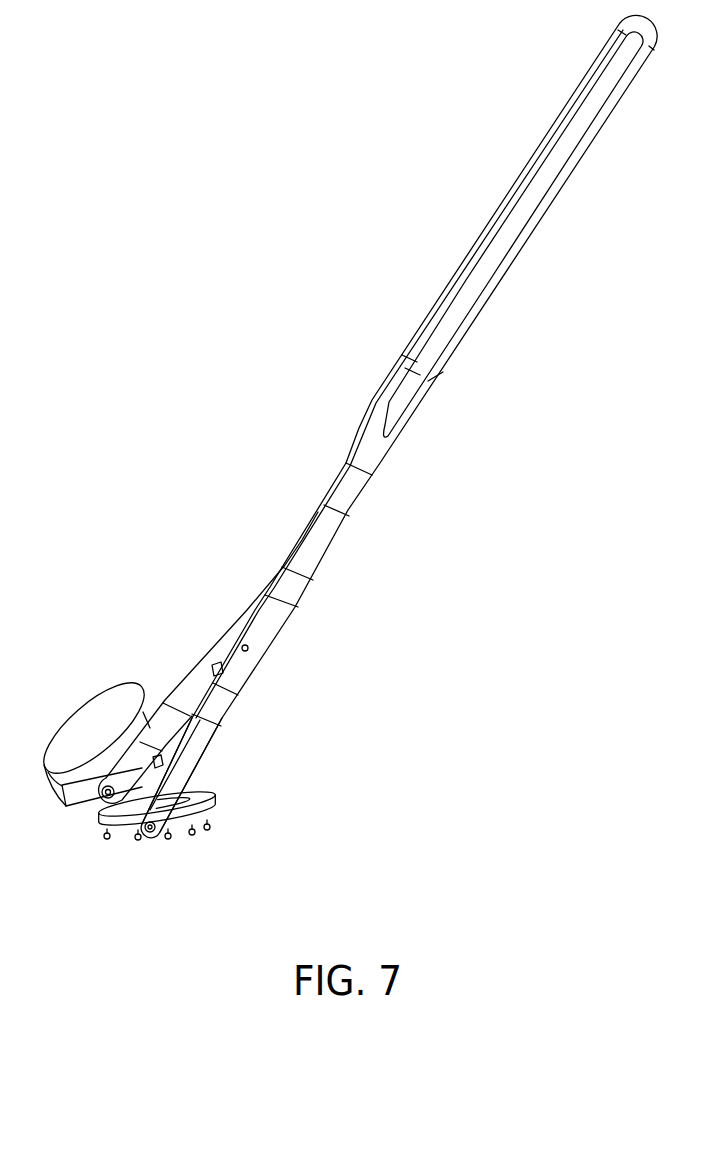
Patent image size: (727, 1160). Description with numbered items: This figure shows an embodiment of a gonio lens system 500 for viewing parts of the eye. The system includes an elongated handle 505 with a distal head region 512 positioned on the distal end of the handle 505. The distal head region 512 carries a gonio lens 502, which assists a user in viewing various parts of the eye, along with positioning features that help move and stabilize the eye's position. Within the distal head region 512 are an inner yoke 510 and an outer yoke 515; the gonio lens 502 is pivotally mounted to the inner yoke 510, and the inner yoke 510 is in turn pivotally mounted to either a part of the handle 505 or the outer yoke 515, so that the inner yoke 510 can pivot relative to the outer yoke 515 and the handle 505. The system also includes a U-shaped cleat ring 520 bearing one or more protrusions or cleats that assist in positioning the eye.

The gonio lens system 500 is at (232, 144).
The handle 505 is at (548, 178).
The gonio lens 502 is at (85, 728).
The inner yoke 510 is at (191, 698).
The outer yoke 515 is at (190, 757).
The cleat ring 520 is at (198, 818).
The distal head region 512 is at (161, 853).